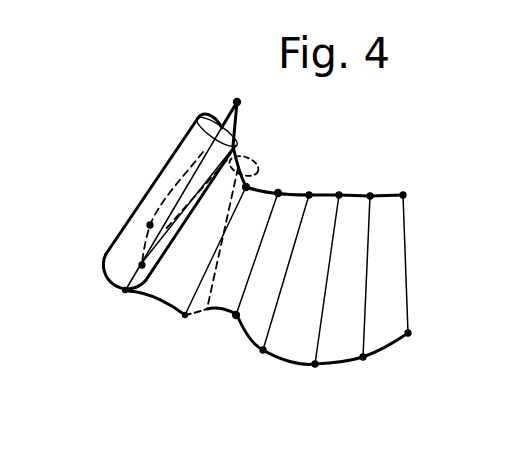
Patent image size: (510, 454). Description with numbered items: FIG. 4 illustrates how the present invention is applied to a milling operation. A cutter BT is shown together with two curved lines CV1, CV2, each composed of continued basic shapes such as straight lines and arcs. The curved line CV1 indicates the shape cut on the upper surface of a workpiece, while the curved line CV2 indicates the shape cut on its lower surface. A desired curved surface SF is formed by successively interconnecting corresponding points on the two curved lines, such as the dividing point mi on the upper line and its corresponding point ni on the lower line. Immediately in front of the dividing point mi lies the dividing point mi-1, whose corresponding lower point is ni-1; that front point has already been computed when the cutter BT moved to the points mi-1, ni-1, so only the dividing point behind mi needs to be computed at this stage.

The cutter BT is at (110, 243).
The curved line CV1 is at (340, 187).
The curved line CV2 is at (353, 360).
The curved surface SF is at (297, 352).
The dividing point mi-1 is at (233, 144).
The dividing point mi is at (263, 187).
The point ni-1 is at (127, 290).
The point ni is at (184, 315).